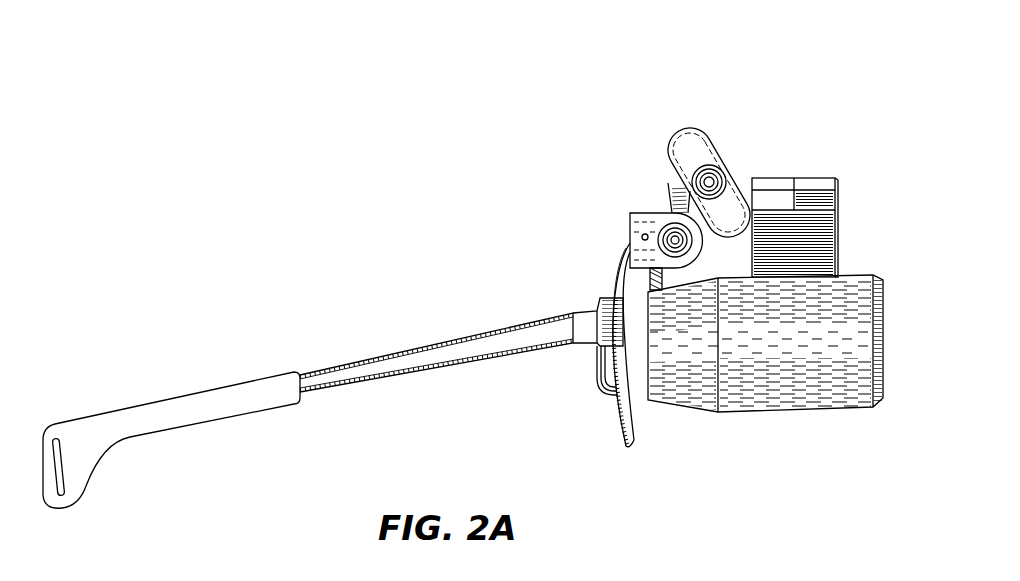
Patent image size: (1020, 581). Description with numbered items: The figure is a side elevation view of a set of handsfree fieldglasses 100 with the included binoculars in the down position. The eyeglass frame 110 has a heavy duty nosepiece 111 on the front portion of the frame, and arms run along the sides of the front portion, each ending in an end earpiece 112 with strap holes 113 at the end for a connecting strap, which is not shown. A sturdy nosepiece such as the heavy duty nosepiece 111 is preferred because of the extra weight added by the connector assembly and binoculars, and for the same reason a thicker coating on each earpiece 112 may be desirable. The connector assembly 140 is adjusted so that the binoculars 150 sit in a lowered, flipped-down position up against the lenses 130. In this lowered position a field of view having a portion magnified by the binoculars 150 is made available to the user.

The paint roller tool assembly 100 is at (548, 84).
The eyeglass frame 110 is at (318, 378).
The heavy duty nosepiece 111 is at (598, 375).
The end earpiece 112 is at (185, 405).
The strap holes 113 is at (73, 493).
The lenses 130 is at (635, 407).
The connector assembly 140 is at (722, 128).
The binoculars 150 is at (790, 385).